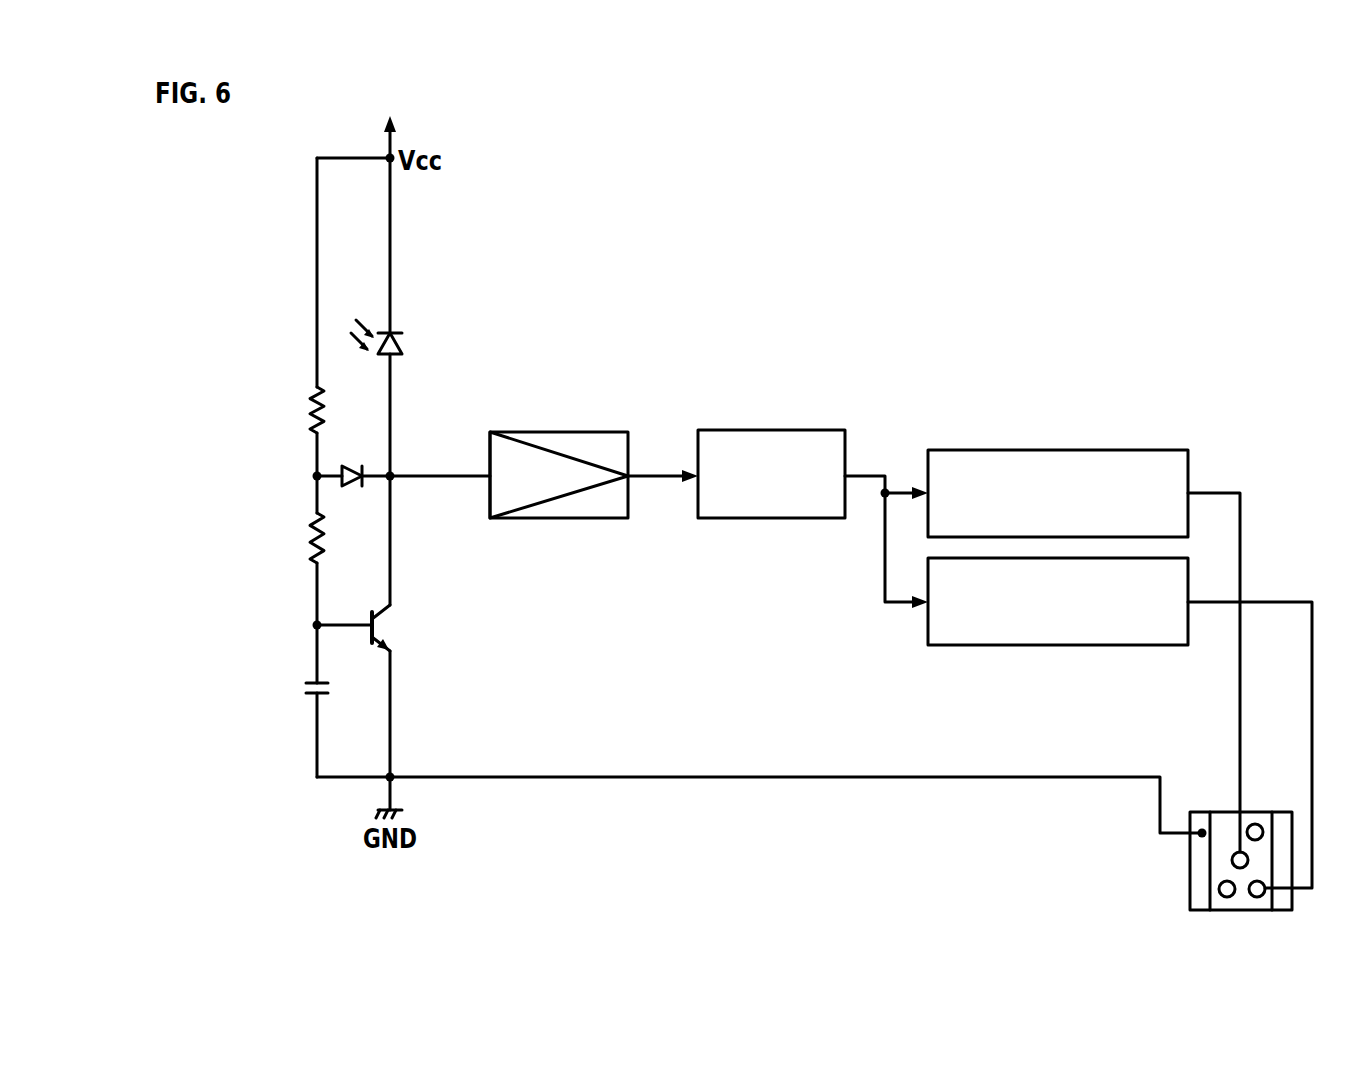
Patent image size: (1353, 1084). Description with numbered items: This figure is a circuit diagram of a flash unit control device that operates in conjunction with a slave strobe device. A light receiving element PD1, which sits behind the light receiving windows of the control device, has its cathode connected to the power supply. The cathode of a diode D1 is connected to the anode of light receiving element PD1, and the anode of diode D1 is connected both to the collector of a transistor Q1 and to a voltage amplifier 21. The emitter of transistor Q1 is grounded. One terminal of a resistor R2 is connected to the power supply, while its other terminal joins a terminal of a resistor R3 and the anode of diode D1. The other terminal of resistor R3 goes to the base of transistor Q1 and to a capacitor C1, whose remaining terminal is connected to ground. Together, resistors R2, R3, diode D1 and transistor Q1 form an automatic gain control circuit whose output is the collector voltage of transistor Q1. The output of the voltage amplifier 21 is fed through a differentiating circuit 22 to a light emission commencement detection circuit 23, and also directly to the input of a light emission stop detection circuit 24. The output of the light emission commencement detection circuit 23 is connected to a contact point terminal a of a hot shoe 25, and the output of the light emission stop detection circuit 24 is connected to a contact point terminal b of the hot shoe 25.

The voltage amplifier 21 is at (617, 518).
The differentiating circuit 22 is at (835, 518).
The light emission commencement detection circuit 23 is at (1170, 450).
The light emission stop detection circuit 24 is at (1170, 645).
The hot shoe 25 is at (1190, 883).
The light receiving element PD1 is at (403, 462).
The diode D1 is at (403, 461).
The resistor R2 is at (298, 410).
The resistor R3 is at (298, 538).
The transistor Q1 is at (369, 628).
The capacitor C1 is at (300, 725).
The contact point terminal a is at (1237, 853).
The contact point terminal b is at (1259, 897).